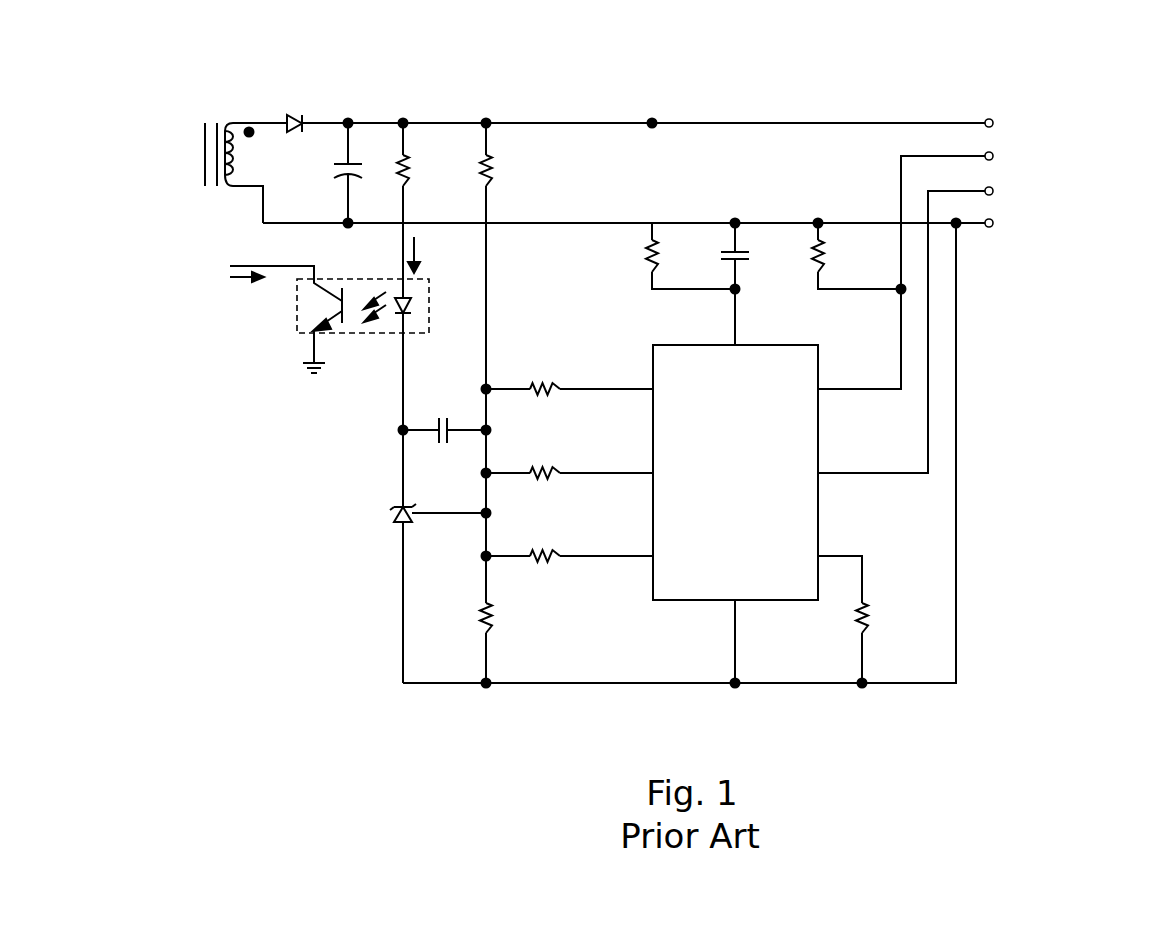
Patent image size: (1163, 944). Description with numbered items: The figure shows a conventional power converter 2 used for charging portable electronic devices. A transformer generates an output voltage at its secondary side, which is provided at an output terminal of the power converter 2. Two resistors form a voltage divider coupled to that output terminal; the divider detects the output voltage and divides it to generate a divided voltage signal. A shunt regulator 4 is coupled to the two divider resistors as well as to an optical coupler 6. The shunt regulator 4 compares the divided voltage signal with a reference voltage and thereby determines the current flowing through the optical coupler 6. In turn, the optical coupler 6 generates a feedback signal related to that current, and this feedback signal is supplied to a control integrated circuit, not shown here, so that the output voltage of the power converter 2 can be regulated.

The power converter 2 is at (674, 363).
The shunt regulator 4 is at (391, 524).
The optical coupler 6 is at (382, 334).